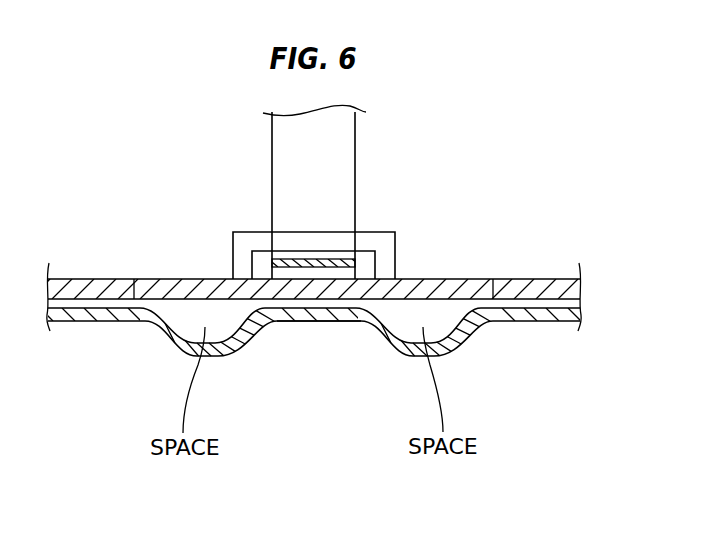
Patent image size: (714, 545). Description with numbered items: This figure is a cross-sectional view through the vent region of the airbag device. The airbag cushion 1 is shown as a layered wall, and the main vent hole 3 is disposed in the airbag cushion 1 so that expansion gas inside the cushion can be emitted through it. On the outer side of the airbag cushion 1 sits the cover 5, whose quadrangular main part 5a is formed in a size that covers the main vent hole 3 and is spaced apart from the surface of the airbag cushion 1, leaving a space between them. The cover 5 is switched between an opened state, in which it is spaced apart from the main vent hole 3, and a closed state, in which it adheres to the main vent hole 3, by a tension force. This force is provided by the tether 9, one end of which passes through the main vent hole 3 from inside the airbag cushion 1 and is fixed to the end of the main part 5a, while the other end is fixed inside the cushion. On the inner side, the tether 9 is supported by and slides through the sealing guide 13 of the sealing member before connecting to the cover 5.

The airbag cushion 1 is at (100, 279).
The main vent hole 3 is at (185, 279).
The cover 5 is at (92, 322).
The main part 5a is at (313, 322).
The tether 9 is at (284, 140).
The sealing guide 13 is at (392, 237).